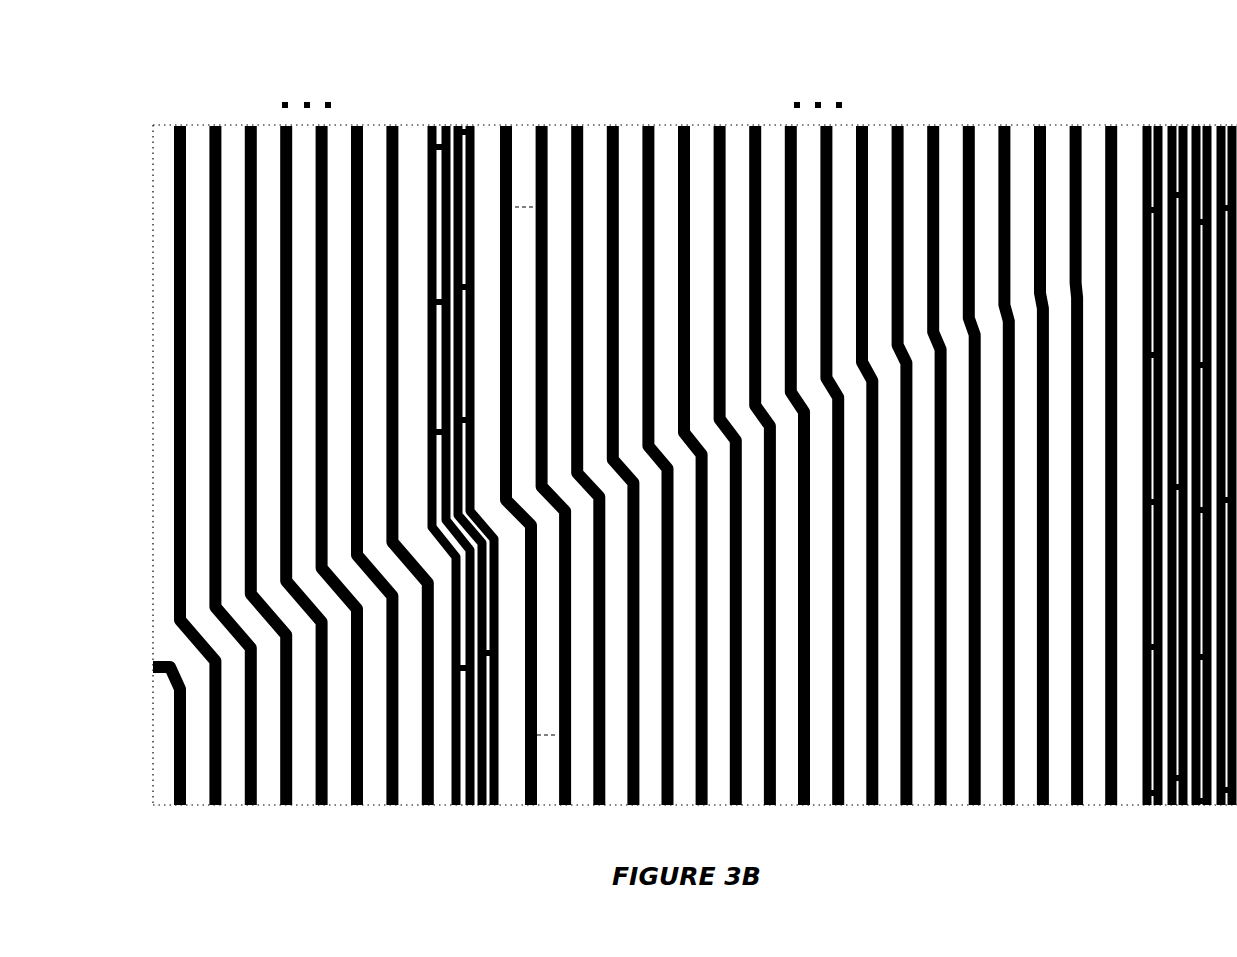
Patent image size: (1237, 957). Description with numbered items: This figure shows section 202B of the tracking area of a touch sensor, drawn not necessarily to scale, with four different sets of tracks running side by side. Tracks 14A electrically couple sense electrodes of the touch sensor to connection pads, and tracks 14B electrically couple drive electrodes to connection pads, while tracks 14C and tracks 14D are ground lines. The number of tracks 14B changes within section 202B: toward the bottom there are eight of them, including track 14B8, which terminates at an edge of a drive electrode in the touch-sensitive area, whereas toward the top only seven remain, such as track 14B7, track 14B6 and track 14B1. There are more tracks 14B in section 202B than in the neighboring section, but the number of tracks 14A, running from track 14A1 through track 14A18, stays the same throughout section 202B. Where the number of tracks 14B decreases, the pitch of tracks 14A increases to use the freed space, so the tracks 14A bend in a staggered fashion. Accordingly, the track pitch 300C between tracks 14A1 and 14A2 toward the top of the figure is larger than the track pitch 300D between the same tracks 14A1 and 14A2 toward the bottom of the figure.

The section 202B is at (155, 122).
The tracks 14B is at (277, 445).
The track 14B7 is at (174, 318).
The track 14B6 is at (217, 123).
The track 14B1 is at (395, 123).
The track 14B8 is at (142, 736).
The tracks 14C is at (445, 807).
The tracks 14A is at (828, 461).
The track 14A1 is at (506, 123).
The track 14A2 is at (542, 123).
The track 14A18 is at (1112, 123).
The track pitch 300C is at (520, 202).
The track pitch 300D is at (566, 808).
The tracks 14D is at (1140, 807).